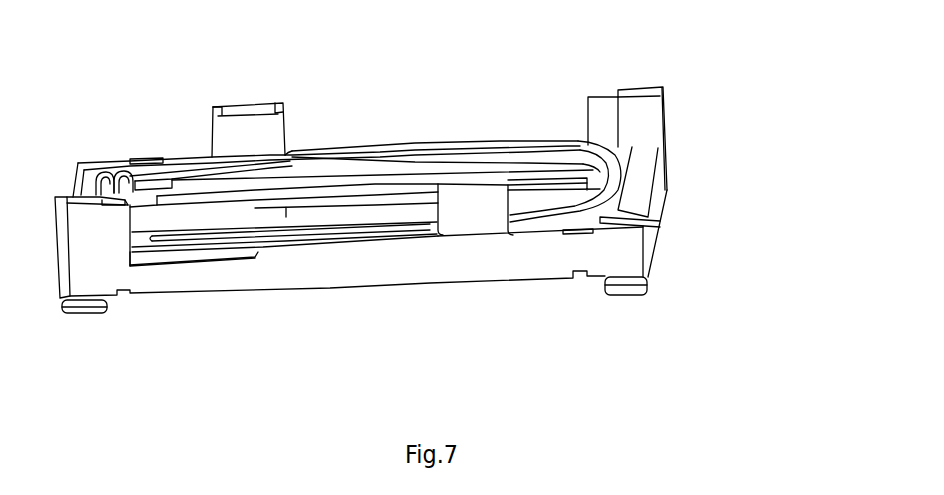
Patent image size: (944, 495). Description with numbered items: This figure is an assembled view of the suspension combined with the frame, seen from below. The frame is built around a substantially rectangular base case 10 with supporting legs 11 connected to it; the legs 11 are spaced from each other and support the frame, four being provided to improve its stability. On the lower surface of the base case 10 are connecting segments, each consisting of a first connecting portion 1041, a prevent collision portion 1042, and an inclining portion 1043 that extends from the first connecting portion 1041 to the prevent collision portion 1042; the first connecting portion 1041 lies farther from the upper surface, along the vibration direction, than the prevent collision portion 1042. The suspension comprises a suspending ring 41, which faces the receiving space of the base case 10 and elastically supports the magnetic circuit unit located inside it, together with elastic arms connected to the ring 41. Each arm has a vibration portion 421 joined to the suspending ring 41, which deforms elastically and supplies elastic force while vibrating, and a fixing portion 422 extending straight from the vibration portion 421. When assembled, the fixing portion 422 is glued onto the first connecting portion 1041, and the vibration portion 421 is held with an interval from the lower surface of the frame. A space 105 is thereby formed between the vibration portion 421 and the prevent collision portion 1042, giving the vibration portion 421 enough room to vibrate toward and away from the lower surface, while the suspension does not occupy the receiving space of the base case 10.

The base case 10 is at (550, 255).
The supporting leg 11 is at (602, 112).
The suspending ring 41 is at (610, 177).
The vibration portion 421 is at (643, 200).
The fixing portion 422 is at (245, 238).
The space 105 is at (216, 250).
The first connecting portion 1041 is at (397, 242).
The prevent collision portion 1042 is at (173, 261).
The inclining portion 1043 is at (285, 253).